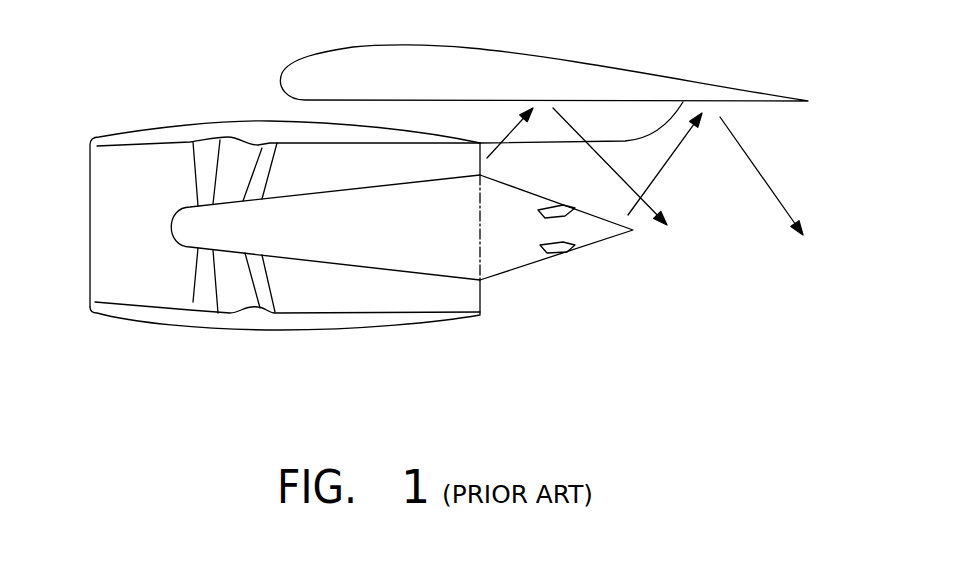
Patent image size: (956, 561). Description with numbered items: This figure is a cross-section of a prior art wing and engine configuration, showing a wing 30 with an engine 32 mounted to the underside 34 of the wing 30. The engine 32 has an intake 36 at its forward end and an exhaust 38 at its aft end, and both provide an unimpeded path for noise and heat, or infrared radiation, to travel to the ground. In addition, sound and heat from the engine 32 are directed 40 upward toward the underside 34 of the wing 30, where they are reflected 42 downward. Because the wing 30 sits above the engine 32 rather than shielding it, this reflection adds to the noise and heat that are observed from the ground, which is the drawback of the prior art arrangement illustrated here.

The wing 30 is at (398, 45).
The engine 32 is at (139, 101).
The underside of the wing 34 is at (767, 105).
The intake 36 is at (88, 228).
The exhaust 38 is at (480, 298).
The directed sound and heat 40 is at (510, 133).
The reflected sound and heat 42 is at (647, 197).